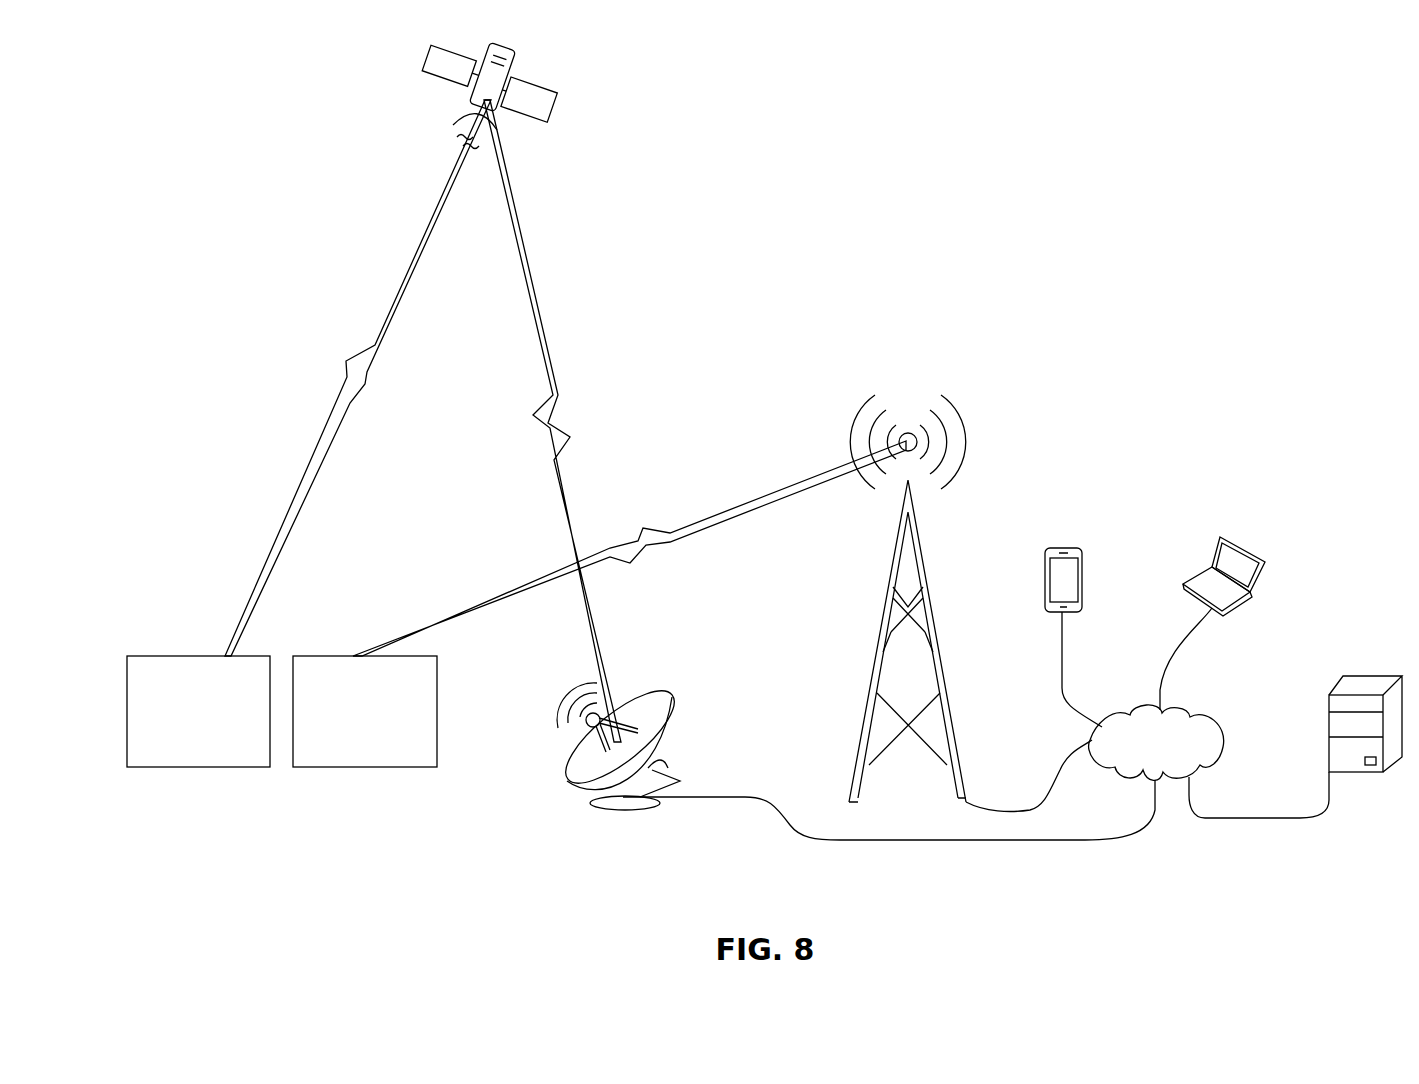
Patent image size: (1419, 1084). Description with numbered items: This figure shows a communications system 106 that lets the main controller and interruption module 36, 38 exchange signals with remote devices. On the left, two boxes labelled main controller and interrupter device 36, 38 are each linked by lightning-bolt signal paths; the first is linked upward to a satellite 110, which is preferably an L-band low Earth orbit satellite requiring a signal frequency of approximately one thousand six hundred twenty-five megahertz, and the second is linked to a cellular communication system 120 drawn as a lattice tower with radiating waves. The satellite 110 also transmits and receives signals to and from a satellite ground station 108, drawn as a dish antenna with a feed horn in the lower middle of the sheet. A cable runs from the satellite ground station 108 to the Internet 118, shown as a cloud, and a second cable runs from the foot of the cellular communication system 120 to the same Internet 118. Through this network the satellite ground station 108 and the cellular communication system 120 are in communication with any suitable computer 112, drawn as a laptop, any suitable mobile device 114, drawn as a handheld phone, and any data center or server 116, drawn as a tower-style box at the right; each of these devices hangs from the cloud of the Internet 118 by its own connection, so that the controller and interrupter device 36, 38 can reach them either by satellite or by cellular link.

The system 106 is at (662, 147).
The satellite ground station 108 is at (678, 712).
The satellite 110 is at (553, 88).
The computer 112 is at (1242, 534).
The mobile device 114 is at (1068, 548).
The server 116 is at (1360, 678).
The Internet 118 is at (1192, 706).
The cellular communication system 120 is at (984, 382).
The main controller 36 is at (208, 768).
The interruption module 38 is at (372, 768).